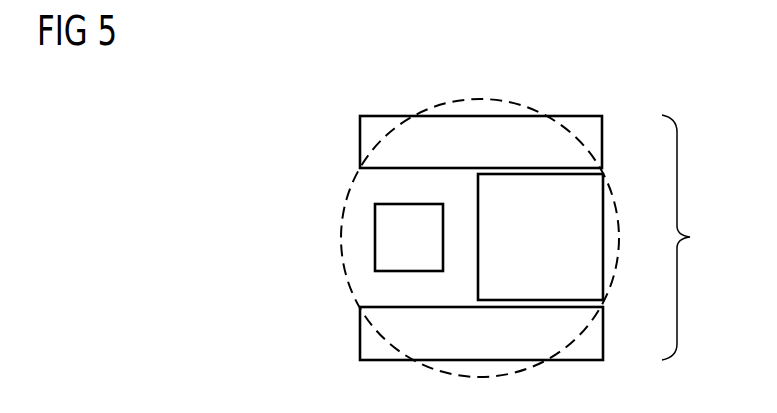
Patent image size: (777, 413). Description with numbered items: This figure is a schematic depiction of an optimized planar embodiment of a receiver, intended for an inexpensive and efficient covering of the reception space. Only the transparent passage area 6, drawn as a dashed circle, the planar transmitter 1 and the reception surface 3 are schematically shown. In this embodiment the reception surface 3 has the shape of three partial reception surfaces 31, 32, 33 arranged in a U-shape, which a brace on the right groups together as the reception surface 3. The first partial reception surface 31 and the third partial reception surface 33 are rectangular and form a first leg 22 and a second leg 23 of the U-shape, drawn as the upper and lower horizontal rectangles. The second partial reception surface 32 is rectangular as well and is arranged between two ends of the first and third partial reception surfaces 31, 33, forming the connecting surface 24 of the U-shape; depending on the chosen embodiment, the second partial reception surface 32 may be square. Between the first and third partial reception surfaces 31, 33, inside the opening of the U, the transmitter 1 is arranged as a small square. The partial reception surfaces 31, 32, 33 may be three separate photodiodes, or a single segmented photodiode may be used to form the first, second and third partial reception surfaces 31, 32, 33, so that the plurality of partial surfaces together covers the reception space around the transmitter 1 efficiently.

The transmitter 1 is at (375, 238).
The reception surface 3 is at (684, 237).
The transparent passage area 6 is at (352, 188).
The first leg 22 is at (357, 141).
The second leg 23 is at (357, 334).
The connecting surface 24 is at (470, 252).
The first partial reception surface 31 is at (586, 140).
The second partial reception surface 32 is at (586, 238).
The third partial reception surface 33 is at (587, 333).